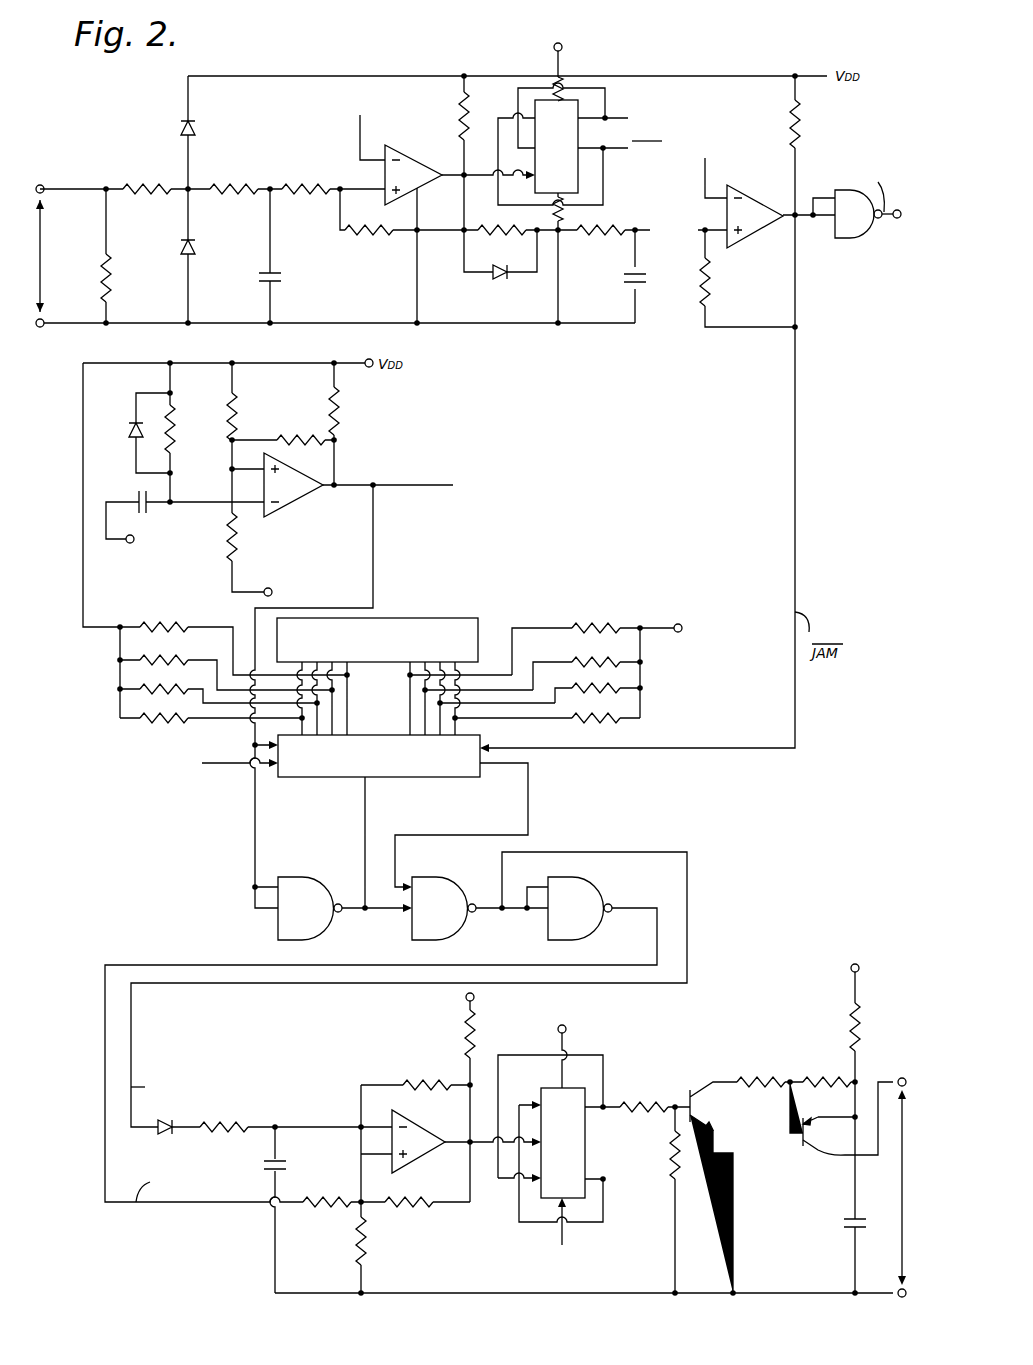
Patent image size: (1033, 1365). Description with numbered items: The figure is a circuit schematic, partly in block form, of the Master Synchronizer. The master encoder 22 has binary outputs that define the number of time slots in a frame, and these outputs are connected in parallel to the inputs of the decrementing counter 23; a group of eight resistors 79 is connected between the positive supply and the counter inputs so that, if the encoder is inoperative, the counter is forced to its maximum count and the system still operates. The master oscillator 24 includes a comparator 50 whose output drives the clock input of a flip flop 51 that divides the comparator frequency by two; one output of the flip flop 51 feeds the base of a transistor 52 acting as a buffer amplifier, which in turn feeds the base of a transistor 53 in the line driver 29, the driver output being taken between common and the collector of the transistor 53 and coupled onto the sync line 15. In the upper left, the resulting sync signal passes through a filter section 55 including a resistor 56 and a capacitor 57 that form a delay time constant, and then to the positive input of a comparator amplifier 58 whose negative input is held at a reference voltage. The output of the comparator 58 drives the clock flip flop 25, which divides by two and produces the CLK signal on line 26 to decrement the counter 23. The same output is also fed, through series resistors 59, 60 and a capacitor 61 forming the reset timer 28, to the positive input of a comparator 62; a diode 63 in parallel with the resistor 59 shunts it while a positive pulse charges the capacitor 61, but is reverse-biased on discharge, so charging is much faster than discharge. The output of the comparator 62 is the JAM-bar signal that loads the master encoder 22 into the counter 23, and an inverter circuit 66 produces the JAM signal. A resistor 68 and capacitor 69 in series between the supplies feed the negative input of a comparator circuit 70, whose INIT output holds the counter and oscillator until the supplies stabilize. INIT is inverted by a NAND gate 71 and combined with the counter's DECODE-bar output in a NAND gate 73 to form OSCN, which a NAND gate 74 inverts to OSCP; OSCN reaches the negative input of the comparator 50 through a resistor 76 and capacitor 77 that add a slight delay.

The sync line 15 is at (896, 1236).
The master encoder 22 is at (441, 618).
The counter 23 is at (305, 778).
The master oscillator 24 is at (333, 1091).
The clock flip flop 25 is at (578, 185).
The line 26 is at (618, 117).
The reset timer 28 is at (608, 294).
The line driver circuit 29 is at (810, 1227).
The comparator 50 is at (420, 1160).
The flip flop 51 is at (585, 1138).
The transistor 52 is at (702, 1084).
The transistor 53 is at (800, 1154).
The filter section 55 is at (254, 252).
The resistor 56 is at (234, 185).
The capacitor 57 is at (282, 280).
The comparator amplifier 58 is at (418, 163).
The resistor 59 is at (510, 231).
The resistor 60 is at (610, 228).
The capacitor 61 is at (641, 283).
The comparator 62 is at (750, 200).
The diode 63 is at (495, 277).
The inverter circuit 66 is at (852, 240).
The resistor 68 is at (178, 432).
The capacitor 69 is at (148, 512).
The comparator circuit 70 is at (296, 506).
The NAND gate 71 is at (308, 878).
The NAND gate 73 is at (460, 933).
The NAND gate 74 is at (597, 890).
The resistor 76 is at (232, 1122).
The capacitor 77 is at (288, 1170).
The resistors 79 is at (120, 718).